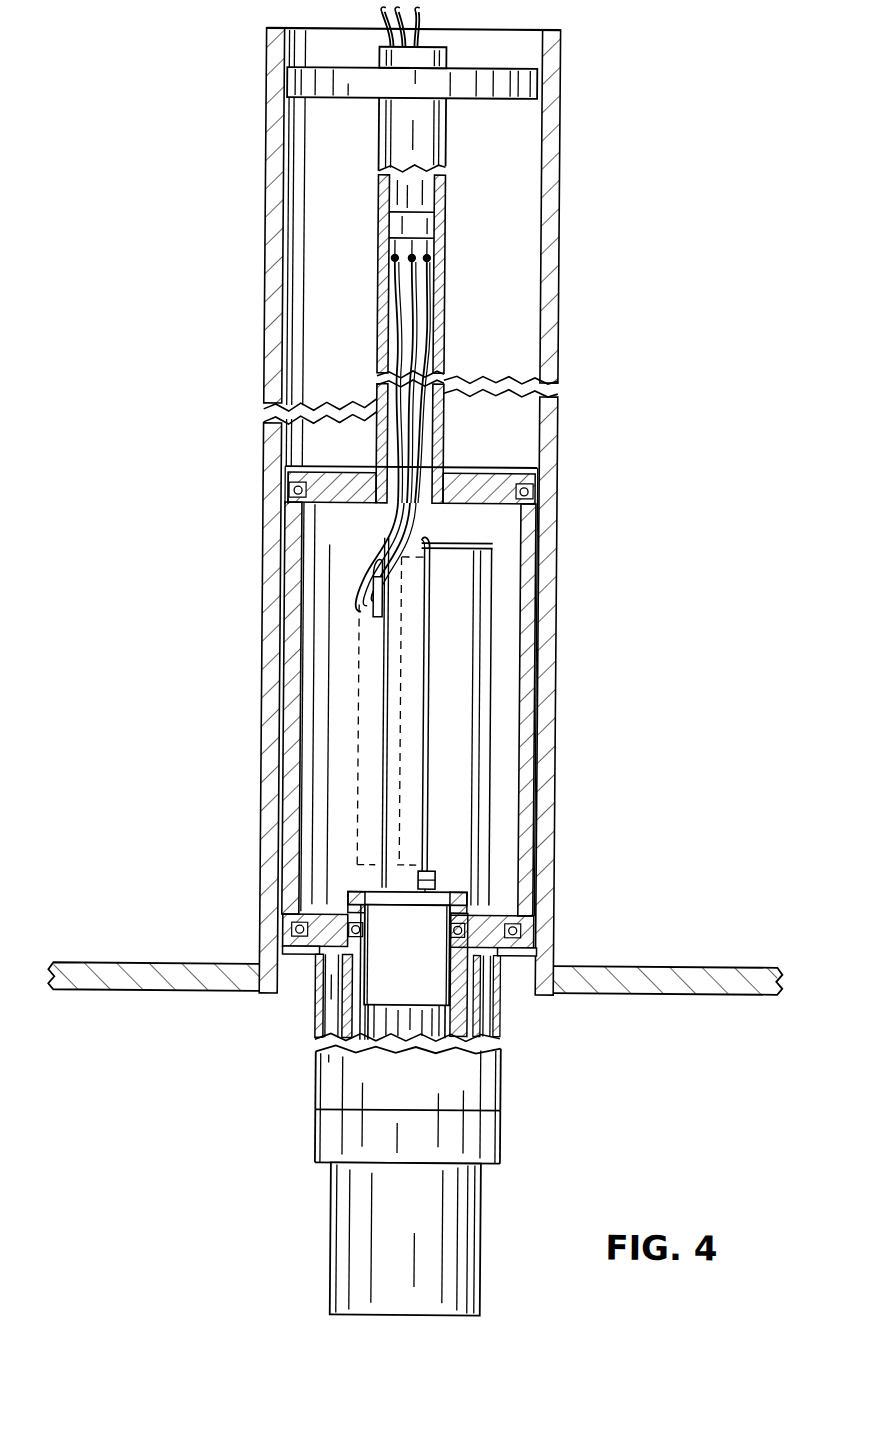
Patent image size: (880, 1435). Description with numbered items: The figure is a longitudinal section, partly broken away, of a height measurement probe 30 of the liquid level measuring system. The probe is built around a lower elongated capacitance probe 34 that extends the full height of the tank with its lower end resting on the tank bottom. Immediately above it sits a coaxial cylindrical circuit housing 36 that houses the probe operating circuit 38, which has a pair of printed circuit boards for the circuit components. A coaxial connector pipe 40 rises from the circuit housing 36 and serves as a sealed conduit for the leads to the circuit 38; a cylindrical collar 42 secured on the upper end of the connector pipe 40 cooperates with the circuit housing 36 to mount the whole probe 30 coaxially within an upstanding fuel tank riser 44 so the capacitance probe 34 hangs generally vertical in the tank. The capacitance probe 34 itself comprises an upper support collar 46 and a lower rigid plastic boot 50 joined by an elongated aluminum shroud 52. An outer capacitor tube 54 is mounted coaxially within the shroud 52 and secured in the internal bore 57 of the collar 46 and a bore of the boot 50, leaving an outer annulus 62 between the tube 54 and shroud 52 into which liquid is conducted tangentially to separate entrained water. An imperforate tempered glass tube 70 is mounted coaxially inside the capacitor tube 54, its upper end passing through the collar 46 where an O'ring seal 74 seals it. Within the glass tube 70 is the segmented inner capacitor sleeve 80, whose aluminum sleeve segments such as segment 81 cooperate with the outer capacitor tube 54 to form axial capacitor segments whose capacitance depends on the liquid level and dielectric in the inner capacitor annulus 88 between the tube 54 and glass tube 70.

The height measurement probe 30 is at (564, 644).
The capacitance probe 34 is at (507, 1092).
The circuit housing 36 is at (530, 704).
The probe operating circuit 38 is at (490, 589).
The connector pipe 40 is at (444, 337).
The cylindrical collar 42 is at (457, 92).
The fuel tank riser 44 is at (556, 875).
The upper support collar 46 is at (321, 912).
The lower boot 50 is at (507, 1145).
The shroud 52 is at (507, 1013).
The outer capacitor tube 54 is at (321, 1037).
The internal bore 57 is at (371, 963).
The annulus 62 is at (329, 1013).
The glass tube 70 is at (364, 993).
The O'ring seal 74 is at (370, 927).
The inner capacitor sleeve 80 is at (417, 1014).
The sleeve segment 81 is at (427, 1030).
The inner capacitor annulus 88 is at (356, 995).